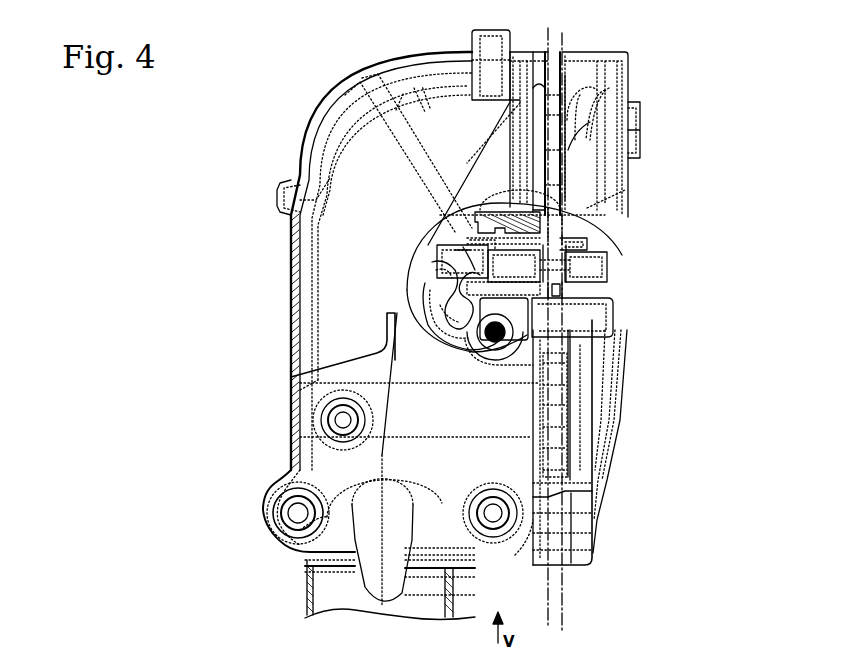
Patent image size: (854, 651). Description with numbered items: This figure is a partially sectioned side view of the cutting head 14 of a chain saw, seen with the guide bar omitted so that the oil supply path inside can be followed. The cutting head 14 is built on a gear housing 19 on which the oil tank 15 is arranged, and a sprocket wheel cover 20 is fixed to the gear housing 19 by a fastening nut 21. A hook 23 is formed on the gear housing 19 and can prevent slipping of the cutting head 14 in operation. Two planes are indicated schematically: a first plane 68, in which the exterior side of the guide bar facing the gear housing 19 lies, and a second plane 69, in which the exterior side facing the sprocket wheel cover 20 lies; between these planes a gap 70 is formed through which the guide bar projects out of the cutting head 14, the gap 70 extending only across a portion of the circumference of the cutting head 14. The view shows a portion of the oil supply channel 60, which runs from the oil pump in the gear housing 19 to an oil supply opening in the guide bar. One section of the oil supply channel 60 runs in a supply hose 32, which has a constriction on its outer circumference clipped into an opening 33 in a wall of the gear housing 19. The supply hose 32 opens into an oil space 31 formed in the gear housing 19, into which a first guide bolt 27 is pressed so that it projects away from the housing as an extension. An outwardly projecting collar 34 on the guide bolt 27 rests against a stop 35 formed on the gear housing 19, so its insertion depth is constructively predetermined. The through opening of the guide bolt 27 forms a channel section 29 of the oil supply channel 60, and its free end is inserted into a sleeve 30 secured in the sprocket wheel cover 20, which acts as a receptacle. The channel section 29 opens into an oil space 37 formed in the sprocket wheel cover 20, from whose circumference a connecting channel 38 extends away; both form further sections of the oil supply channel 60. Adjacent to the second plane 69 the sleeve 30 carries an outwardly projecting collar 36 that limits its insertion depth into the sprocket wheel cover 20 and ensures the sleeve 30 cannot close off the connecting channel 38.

The cutting head 14 is at (704, 140).
The oil tank 15 is at (313, 245).
The gear housing 19 is at (317, 458).
The sprocket wheel cover 20 is at (603, 448).
The fastening nut 21 is at (635, 117).
The hook 23 is at (375, 593).
The first guide bolt 27 is at (578, 280).
The channel section 29 is at (545, 270).
The sleeve 30 is at (575, 248).
The oil space 31 is at (463, 247).
The supply hose 32 is at (440, 283).
The opening 33 is at (438, 278).
The collar 34 is at (547, 242).
The stop 35 is at (540, 245).
The collar 36 is at (565, 283).
The oil space 37 is at (600, 273).
The connecting channel 38 is at (597, 255).
The oil supply channel 60 is at (480, 243).
The first plane 68 is at (547, 43).
The second plane 69 is at (563, 33).
The gap 70 is at (561, 103).